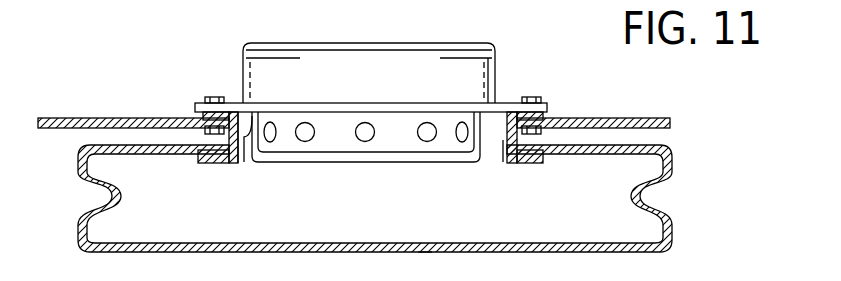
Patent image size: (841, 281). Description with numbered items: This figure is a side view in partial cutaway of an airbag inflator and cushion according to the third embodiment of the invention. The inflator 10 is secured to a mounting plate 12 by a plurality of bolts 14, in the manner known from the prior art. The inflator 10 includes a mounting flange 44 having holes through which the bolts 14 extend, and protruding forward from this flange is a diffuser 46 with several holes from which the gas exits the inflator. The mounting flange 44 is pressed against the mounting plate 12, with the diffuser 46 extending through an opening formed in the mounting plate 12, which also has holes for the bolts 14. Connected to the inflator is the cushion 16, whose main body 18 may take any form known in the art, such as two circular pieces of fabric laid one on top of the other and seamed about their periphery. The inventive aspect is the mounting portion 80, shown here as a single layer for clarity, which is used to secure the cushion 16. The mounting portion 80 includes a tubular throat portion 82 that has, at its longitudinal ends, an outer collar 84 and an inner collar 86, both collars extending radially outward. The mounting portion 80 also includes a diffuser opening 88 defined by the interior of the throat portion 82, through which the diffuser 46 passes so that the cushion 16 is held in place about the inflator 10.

The inflator 10 is at (421, 43).
The mounting plate 12 is at (92, 117).
The bolts 14 is at (209, 97).
The cushion 16 is at (276, 244).
The main body 18 is at (425, 252).
The mounting flange 44 is at (340, 103).
The diffuser 46 is at (355, 163).
The mounting portion 80 is at (508, 167).
The tubular throat portion 82 is at (240, 164).
The outer collar 84 is at (197, 117).
The inner collar 86 is at (212, 164).
The diffuser opening 88 is at (497, 142).